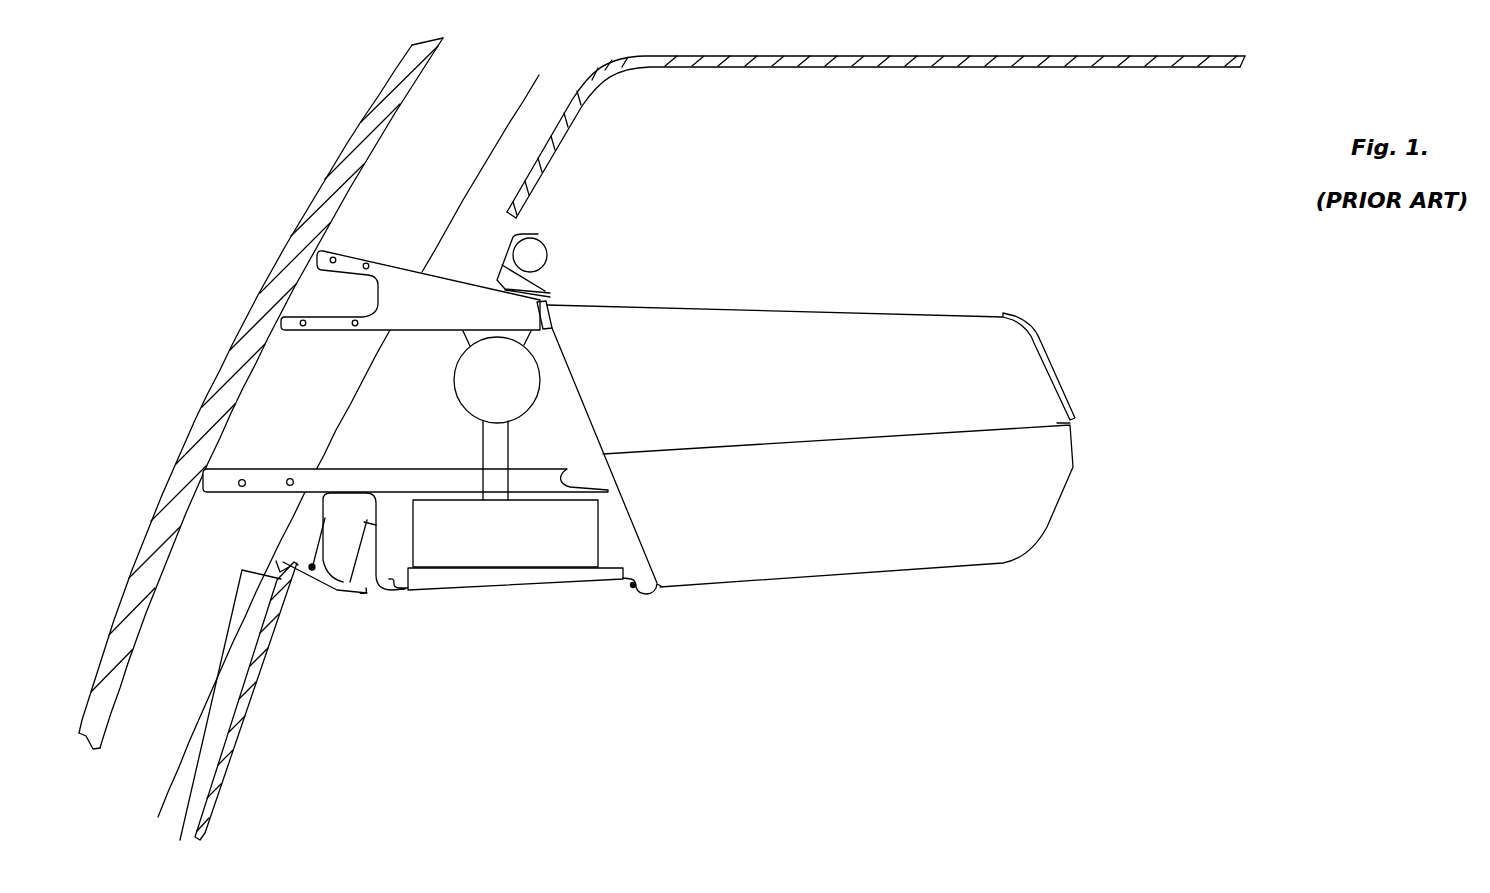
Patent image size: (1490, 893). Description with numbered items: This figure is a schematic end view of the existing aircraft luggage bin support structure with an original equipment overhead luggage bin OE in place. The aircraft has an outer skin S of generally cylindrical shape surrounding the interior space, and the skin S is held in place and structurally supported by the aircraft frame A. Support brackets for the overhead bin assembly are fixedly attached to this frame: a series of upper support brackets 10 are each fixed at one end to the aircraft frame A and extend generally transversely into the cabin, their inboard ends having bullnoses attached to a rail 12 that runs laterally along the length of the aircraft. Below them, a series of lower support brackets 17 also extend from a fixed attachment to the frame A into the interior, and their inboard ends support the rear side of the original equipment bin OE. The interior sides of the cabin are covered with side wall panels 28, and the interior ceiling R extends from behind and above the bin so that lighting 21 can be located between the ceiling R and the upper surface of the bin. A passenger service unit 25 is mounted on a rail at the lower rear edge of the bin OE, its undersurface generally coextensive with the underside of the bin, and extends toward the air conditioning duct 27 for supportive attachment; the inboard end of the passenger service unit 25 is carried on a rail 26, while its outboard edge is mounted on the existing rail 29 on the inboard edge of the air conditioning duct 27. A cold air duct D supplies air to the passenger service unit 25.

The outer skin S is at (331, 183).
The aircraft frame A is at (270, 410).
The interior ceiling R is at (919, 64).
The original equipment overhead luggage bin OE is at (1046, 324).
The cold air duct D is at (497, 415).
The upper support bracket 10 is at (403, 287).
The rail 12 is at (552, 322).
The lower support bracket 17 is at (350, 475).
The lighting 21 is at (548, 260).
The passenger service unit 25 is at (528, 557).
The rail 26 is at (645, 593).
The air conditioning duct 27 is at (337, 592).
The side wall panel 28 is at (232, 743).
The rail 29 is at (400, 593).